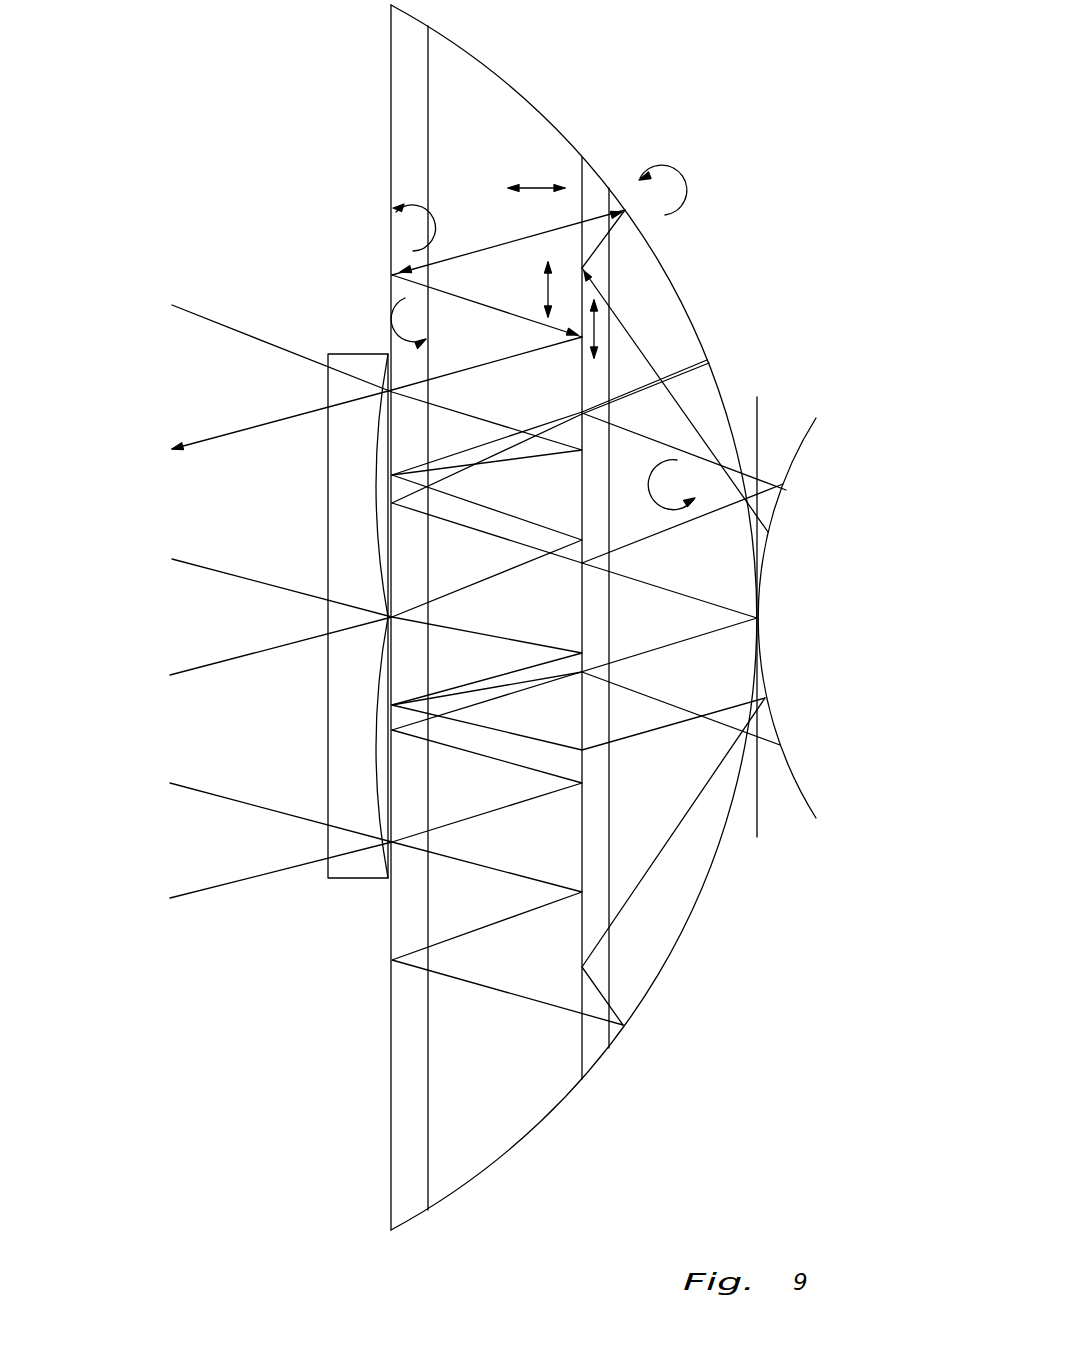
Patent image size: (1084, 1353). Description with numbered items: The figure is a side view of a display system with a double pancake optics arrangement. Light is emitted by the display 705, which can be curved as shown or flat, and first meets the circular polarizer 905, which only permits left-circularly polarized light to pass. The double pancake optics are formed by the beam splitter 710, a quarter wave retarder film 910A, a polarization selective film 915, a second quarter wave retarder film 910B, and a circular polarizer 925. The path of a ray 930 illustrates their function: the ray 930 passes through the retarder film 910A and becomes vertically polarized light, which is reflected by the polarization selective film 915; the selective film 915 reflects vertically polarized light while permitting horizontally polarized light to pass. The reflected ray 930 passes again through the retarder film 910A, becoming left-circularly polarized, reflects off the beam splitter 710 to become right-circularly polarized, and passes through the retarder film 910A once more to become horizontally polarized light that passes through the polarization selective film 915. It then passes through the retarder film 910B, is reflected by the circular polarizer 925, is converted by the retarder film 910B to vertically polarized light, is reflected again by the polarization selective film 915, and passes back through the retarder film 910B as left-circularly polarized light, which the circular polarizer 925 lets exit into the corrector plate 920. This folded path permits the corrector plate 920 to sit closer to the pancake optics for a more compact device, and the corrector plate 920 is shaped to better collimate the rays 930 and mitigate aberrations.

The display 705 is at (803, 783).
The beam splitter 710 is at (513, 1147).
The circular polarizer 905 is at (757, 421).
The quarter wave retarder film 910A is at (609, 268).
The quarter wave retarder film 910B is at (428, 78).
The polarization selective film 915 is at (583, 173).
The corrector plate 920 is at (345, 880).
The circular polarizer 925 is at (391, 80).
The ray 930 is at (632, 337).